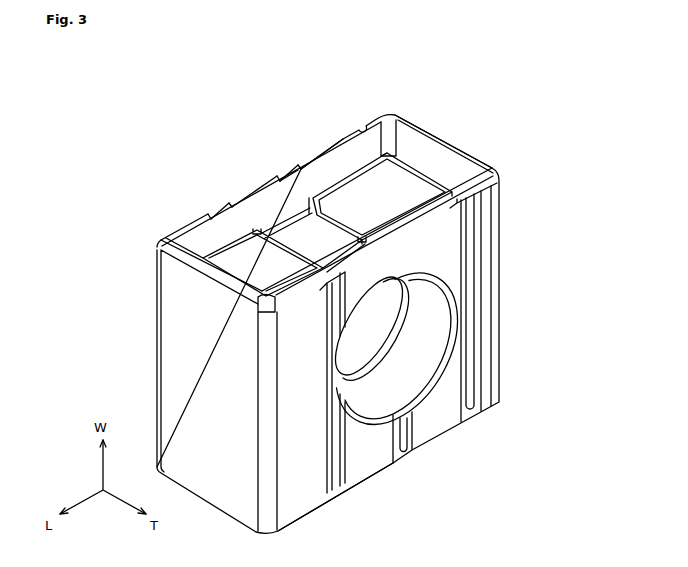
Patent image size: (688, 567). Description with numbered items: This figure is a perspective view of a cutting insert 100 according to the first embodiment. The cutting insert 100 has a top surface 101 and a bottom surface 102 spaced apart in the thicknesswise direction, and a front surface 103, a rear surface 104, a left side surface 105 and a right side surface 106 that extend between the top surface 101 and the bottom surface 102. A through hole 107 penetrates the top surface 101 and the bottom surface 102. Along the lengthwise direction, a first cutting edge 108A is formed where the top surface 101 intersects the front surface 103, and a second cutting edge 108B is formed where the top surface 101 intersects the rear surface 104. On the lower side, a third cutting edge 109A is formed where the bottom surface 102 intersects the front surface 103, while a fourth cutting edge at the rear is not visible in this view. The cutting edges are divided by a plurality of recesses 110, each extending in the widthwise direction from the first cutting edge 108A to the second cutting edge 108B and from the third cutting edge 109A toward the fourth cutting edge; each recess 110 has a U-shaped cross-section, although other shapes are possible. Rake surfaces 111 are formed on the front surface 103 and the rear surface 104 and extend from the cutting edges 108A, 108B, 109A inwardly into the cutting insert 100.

The cutting insert 100 is at (327, 295).
The top surface 101 is at (453, 237).
The bottom surface 102 is at (250, 189).
The front surface 103 is at (400, 173).
The rear surface 104 is at (303, 515).
The left side surface 105 is at (170, 341).
The right side surface 106 is at (463, 153).
The through hole 107 is at (385, 328).
The first cutting edge 108A is at (452, 215).
The second cutting edge 108B is at (437, 442).
The third cutting edge 109A is at (340, 138).
The recess 110 is at (287, 173).
The rake surface 111 is at (442, 266).